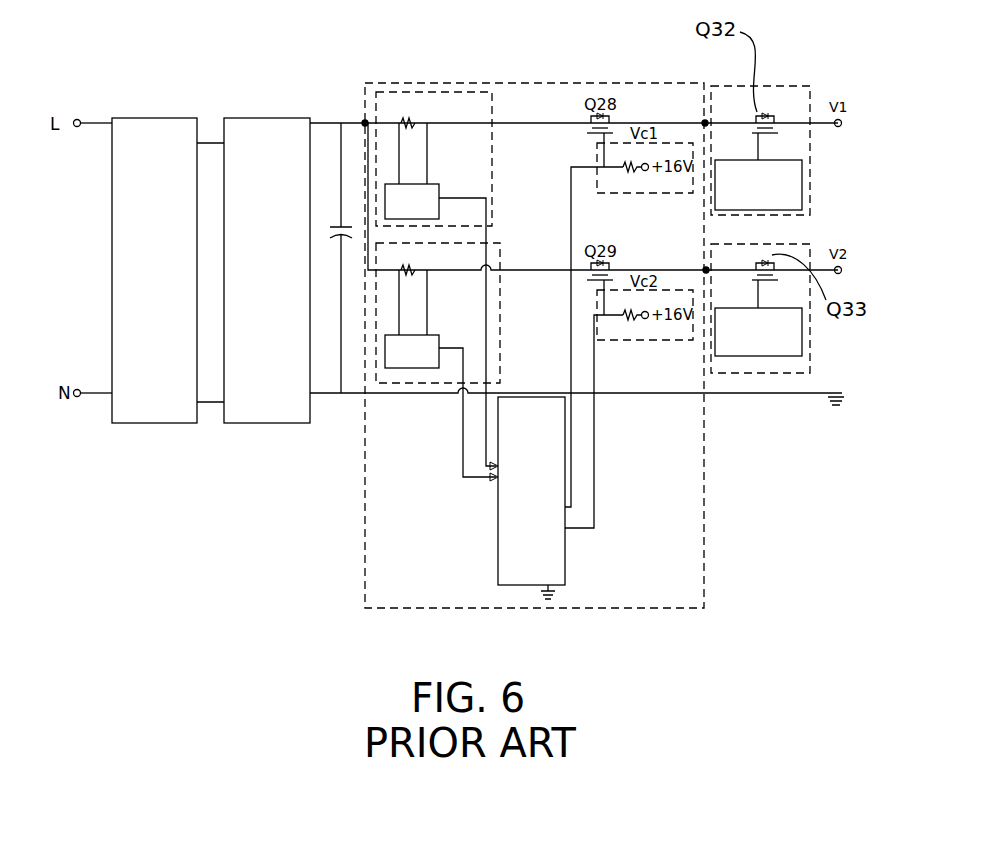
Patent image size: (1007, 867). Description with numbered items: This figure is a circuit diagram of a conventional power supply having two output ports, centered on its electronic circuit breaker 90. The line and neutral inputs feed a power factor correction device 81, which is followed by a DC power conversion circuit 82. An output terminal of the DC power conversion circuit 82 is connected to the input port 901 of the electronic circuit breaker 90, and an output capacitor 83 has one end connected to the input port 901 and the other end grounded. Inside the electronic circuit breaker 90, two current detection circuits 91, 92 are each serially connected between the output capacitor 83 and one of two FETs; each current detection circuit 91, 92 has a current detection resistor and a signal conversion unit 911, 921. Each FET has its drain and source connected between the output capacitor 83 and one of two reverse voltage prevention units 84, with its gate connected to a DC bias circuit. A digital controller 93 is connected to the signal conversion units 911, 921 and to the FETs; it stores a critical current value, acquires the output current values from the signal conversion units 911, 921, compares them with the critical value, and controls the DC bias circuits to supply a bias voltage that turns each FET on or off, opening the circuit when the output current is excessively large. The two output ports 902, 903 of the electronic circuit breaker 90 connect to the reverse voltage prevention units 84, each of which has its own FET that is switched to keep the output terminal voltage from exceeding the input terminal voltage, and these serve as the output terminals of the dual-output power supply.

The power factor correction device 81 is at (150, 118).
The DC power conversion circuit 82 is at (268, 118).
The output capacitor 83 is at (332, 238).
The reverse voltage prevention unit 84 is at (785, 86).
The electronic circuit breaker 90 is at (704, 576).
The current detection circuit 91 is at (440, 92).
The signal conversion unit 911 is at (440, 184).
The current detection circuit 92 is at (437, 383).
The signal conversion unit 921 is at (434, 335).
The digital controller 93 is at (498, 535).
The input port 901 is at (365, 123).
The output port 902 is at (705, 123).
The output port 903 is at (706, 270).